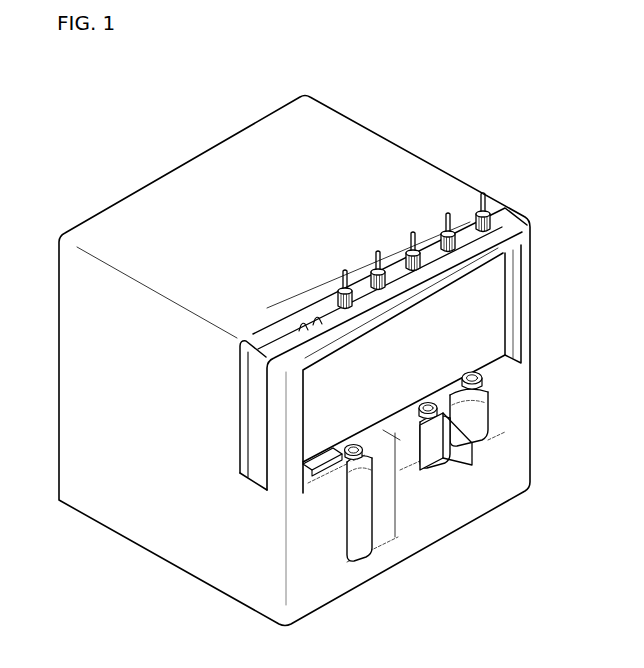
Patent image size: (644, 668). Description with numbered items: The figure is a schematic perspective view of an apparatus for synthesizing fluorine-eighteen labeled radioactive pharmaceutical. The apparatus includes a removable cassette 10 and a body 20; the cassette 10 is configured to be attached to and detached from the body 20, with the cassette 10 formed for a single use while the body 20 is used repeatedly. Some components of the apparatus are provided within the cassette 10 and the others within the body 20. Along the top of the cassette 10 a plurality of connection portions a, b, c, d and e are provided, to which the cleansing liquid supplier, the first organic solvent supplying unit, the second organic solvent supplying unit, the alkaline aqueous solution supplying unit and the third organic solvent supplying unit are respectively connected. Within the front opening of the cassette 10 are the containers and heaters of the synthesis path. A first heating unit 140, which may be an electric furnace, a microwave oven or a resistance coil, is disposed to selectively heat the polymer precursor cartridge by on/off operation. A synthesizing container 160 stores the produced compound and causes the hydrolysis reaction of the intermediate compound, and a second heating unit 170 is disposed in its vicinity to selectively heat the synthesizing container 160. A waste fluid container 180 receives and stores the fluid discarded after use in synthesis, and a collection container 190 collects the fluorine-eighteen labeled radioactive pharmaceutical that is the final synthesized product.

The body 20 is at (366, 141).
The cassette 10 is at (490, 312).
The connection portion a is at (344, 271).
The connection portion b is at (377, 252).
The connection portion c is at (412, 233).
The connection portion d is at (448, 214).
The connection portion e is at (483, 194).
The first heating unit 140 is at (320, 464).
The synthesizing container 160 is at (430, 472).
The second heating unit 170 is at (450, 455).
The waste fluid container 180 is at (363, 507).
The collection container 190 is at (481, 423).